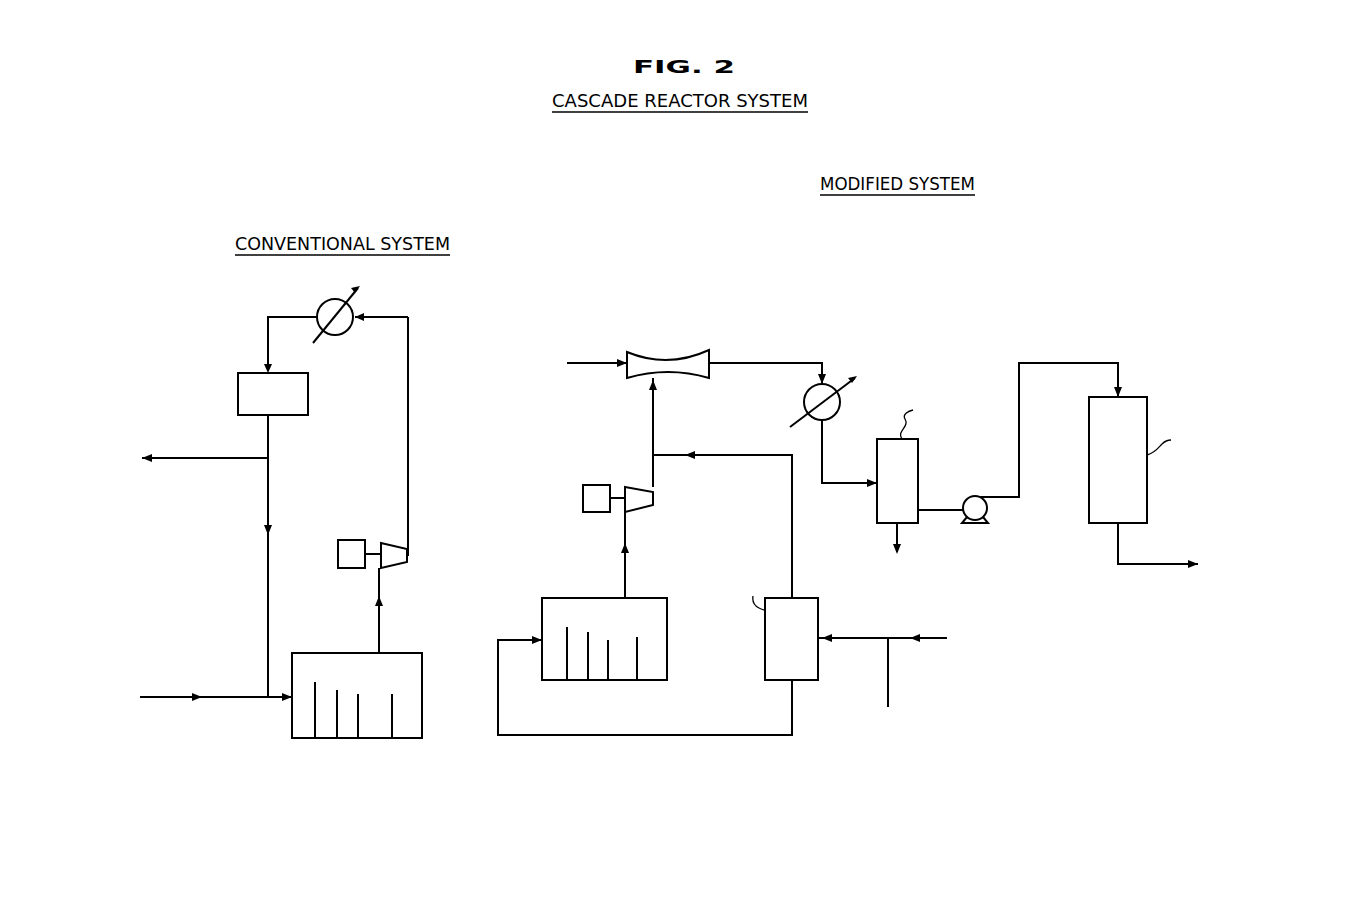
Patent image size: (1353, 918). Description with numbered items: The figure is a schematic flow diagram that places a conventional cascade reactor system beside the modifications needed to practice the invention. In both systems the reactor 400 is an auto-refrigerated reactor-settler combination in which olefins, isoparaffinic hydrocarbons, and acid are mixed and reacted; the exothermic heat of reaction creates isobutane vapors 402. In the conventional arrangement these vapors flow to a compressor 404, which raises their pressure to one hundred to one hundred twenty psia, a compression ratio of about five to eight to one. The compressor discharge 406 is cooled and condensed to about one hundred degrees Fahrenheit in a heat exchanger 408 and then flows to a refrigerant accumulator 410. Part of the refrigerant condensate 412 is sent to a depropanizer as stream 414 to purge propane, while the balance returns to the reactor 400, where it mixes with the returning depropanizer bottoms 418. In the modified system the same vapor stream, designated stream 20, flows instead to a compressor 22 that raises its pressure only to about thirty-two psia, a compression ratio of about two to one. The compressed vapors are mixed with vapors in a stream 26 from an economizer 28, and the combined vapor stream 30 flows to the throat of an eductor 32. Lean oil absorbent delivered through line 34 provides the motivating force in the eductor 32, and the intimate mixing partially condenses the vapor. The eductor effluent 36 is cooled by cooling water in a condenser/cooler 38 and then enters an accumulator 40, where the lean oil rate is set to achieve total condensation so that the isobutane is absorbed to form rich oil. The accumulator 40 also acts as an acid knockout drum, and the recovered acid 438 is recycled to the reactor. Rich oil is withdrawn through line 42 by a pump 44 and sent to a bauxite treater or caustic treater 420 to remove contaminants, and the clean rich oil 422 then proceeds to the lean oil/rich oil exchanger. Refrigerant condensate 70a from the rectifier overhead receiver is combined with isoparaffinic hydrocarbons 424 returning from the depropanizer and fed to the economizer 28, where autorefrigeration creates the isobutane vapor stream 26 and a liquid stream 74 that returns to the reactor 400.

The heat exchanger 408 is at (318, 305).
The refrigerant accumulator 410 is at (238, 396).
The refrigerant condensate 412 is at (270, 441).
The depropanizer stream 414 is at (213, 457).
The compressor discharge 406 is at (410, 492).
The compressor 404 is at (408, 555).
The isobutane vapors 402 is at (380, 636).
The isobutane vapor stream 20 is at (667, 555).
The returning depropanizer bottoms 418 is at (225, 697).
The reactor 400 is at (350, 739).
The line 34 is at (589, 367).
The eductor 32 is at (712, 352).
The eductor effluent 36 is at (768, 363).
The condenser/cooler 38 is at (839, 407).
The accumulator 40 is at (920, 462).
The line 42 is at (938, 509).
The pump 44 is at (966, 524).
The recovered acid 438 is at (896, 538).
The bauxite treater or caustic treater 420 is at (1148, 430).
The clean rich oil 422 is at (1163, 566).
The combined vapor stream 30 is at (655, 428).
The vapor stream 26 is at (790, 538).
The compressor 22 is at (655, 504).
The economizer 28 is at (765, 670).
The liquid stream 74 is at (656, 735).
The refrigerant condensate 70a is at (925, 636).
The isoparaffinic hydrocarbons 424 is at (889, 698).